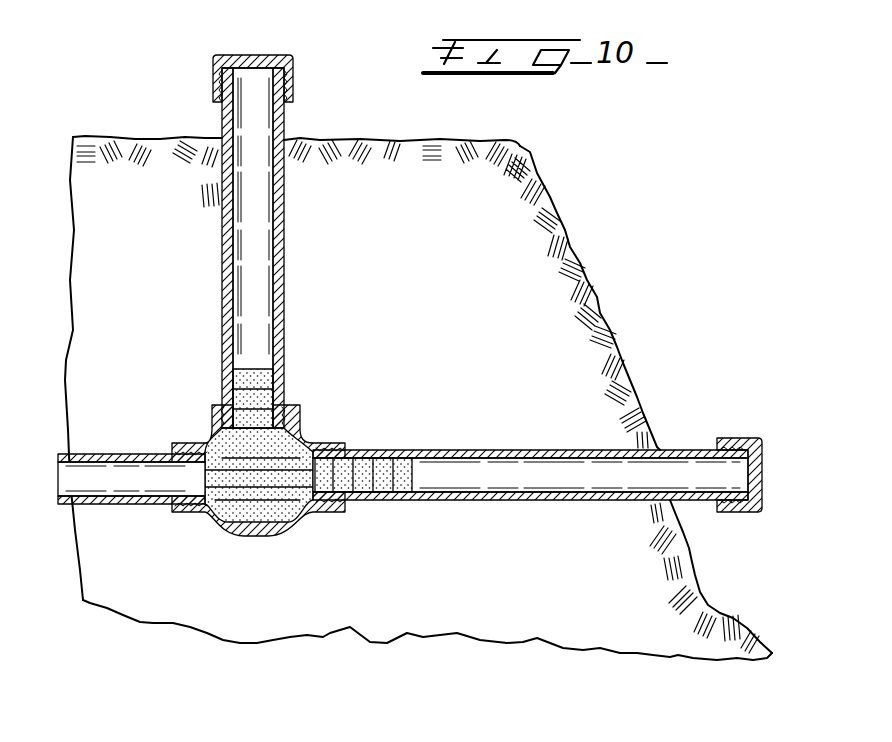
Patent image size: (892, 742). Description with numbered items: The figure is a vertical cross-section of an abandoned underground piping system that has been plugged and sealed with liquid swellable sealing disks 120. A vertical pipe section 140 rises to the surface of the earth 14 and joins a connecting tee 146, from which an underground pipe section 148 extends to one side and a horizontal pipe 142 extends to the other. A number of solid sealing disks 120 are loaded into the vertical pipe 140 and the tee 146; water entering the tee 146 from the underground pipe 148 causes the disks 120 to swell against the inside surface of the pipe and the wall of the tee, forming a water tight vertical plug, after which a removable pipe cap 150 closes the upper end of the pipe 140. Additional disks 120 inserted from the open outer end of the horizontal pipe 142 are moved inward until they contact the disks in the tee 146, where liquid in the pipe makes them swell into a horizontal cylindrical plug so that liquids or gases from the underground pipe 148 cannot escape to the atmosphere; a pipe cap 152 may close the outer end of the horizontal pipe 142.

The surface of the earth 14 is at (387, 140).
The liquid swellable sealing disk 120 is at (268, 418).
The vertical pipe section 140 is at (285, 125).
The horizontal pipe 142 is at (452, 450).
The connecting tee 146 is at (248, 538).
The underground pipe section 148 is at (88, 454).
The removable pipe cap 150 is at (248, 55).
The pipe cap 152 is at (762, 475).